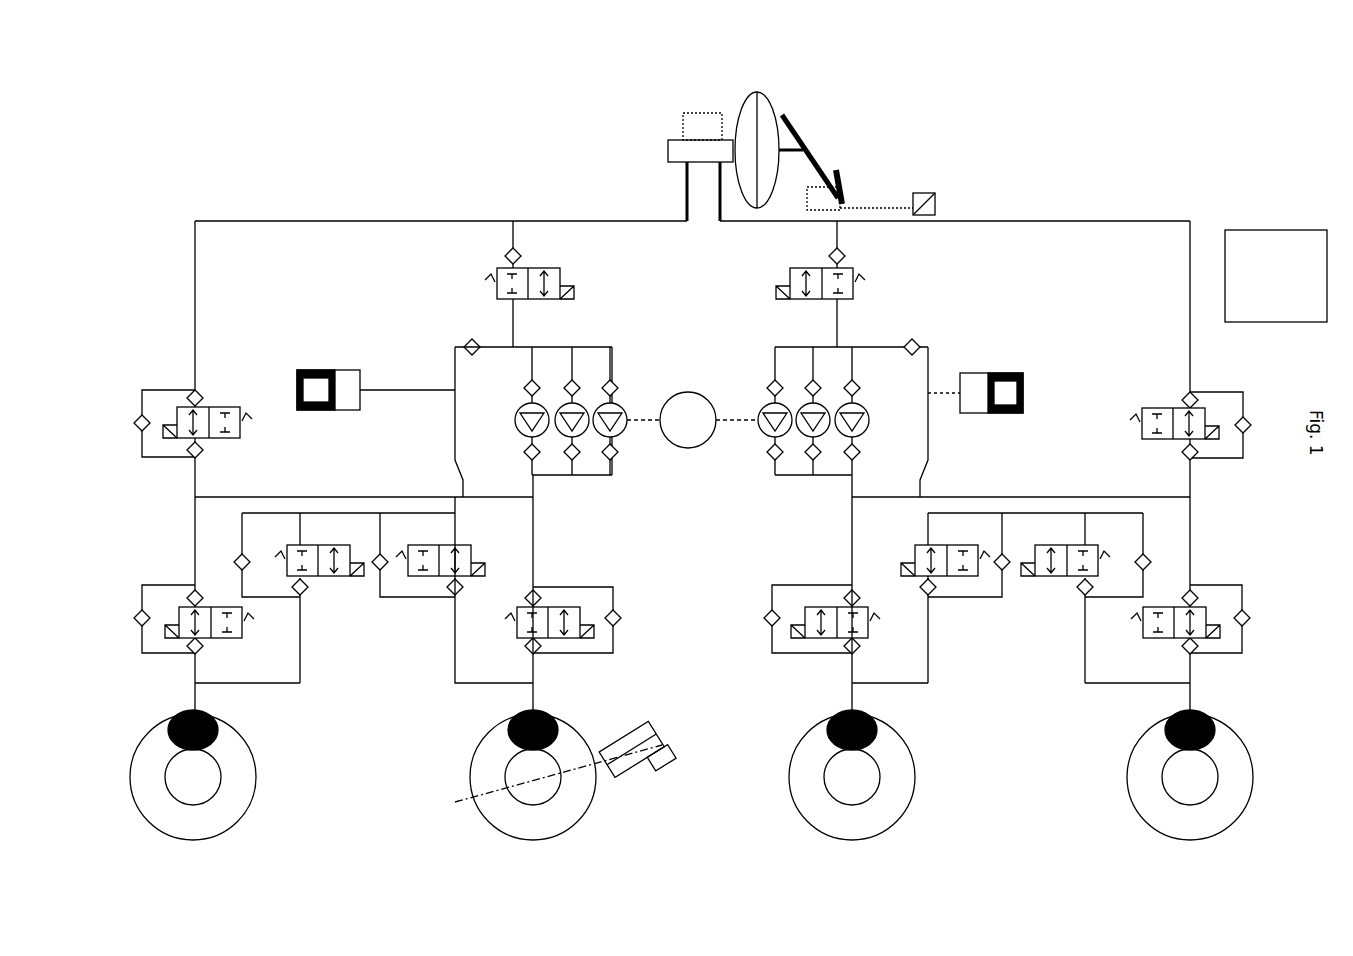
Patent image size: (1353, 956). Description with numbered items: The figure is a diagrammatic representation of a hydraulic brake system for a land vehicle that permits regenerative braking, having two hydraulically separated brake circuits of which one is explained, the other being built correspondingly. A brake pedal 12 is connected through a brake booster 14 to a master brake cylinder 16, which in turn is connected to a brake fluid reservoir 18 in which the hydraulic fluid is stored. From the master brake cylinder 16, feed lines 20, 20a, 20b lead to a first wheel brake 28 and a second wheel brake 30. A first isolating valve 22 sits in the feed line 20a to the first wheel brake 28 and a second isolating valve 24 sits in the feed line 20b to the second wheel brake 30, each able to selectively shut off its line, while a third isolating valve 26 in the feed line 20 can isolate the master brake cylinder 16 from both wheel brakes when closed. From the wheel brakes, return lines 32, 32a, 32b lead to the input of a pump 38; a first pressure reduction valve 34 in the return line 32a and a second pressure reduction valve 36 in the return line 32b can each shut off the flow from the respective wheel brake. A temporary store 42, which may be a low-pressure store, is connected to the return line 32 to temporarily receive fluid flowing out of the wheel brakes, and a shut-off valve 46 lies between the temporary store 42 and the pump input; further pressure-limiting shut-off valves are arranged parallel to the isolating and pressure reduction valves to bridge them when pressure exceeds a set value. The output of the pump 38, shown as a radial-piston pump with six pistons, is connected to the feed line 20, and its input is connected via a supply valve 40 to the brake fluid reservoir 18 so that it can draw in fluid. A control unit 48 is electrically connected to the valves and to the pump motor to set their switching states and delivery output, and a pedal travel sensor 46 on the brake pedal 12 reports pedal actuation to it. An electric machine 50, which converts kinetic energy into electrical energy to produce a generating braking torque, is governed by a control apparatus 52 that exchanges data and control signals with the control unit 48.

The brake pedal 12 is at (850, 180).
The brake booster 14 is at (782, 108).
The master brake cylinder 16 is at (664, 150).
The brake fluid reservoir 18 is at (675, 120).
The feed line 20 is at (360, 218).
The feed line 20a is at (195, 517).
The feed line 20b is at (533, 513).
The first isolating valve 22 is at (262, 633).
The second isolating valve 24 is at (572, 602).
The third isolating valve 26 is at (218, 405).
The first wheel brake 28 is at (240, 742).
The second wheel brake 30 is at (503, 740).
The return line 32 is at (646, 409).
The return line 32a is at (255, 688).
The return line 32b is at (474, 609).
The first pressure reduction valve 34 is at (330, 585).
The second pressure reduction valve 36 is at (427, 585).
The pump 38 is at (618, 412).
The supply valve 40 is at (545, 262).
The temporary store 42 is at (328, 366).
The shut-off valve 46 is at (940, 205).
The control unit 48 is at (1275, 228).
The electric machine 50 is at (640, 718).
The control apparatus 52 is at (680, 760).